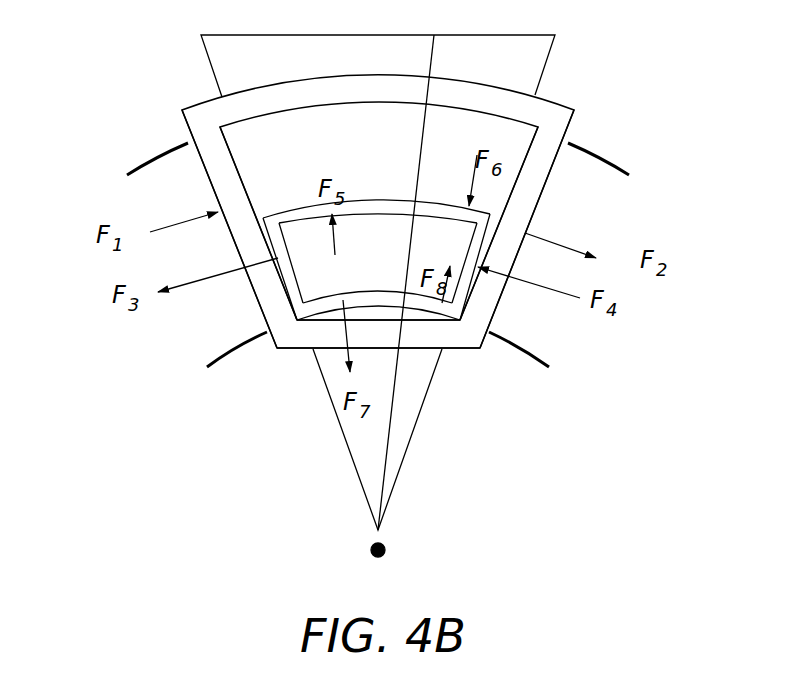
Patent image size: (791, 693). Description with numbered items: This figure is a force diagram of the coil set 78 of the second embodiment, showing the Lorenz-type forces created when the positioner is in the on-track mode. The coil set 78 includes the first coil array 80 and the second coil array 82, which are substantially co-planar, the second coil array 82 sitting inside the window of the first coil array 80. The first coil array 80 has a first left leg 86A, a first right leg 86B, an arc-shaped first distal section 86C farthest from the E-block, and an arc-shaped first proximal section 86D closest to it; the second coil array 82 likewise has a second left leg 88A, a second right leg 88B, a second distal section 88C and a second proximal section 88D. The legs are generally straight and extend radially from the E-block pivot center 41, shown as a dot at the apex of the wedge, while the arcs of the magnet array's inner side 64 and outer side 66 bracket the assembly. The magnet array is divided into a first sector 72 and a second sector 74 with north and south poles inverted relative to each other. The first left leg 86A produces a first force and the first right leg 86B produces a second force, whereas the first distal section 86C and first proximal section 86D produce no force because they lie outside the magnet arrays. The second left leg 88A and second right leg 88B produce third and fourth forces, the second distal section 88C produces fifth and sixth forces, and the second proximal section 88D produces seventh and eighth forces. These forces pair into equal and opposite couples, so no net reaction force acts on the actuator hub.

The coil set 78 is at (154, 91).
The first coil array 80 is at (580, 102).
The arc shaped outer side 66 is at (602, 157).
The arc shaped inner side 64 is at (531, 358).
The E-block pivot center 41 is at (386, 551).
The first sector 72 is at (300, 160).
The second sector 74 is at (460, 191).
The second coil array 82 is at (500, 211).
The first left leg 86A is at (198, 168).
The first right leg 86B is at (536, 177).
The first distal section 86C is at (238, 103).
The first proximal section 86D is at (297, 352).
The second left leg 88A is at (287, 292).
The second right leg 88B is at (476, 278).
The second distal section 88C is at (370, 203).
The second proximal section 88D is at (378, 300).